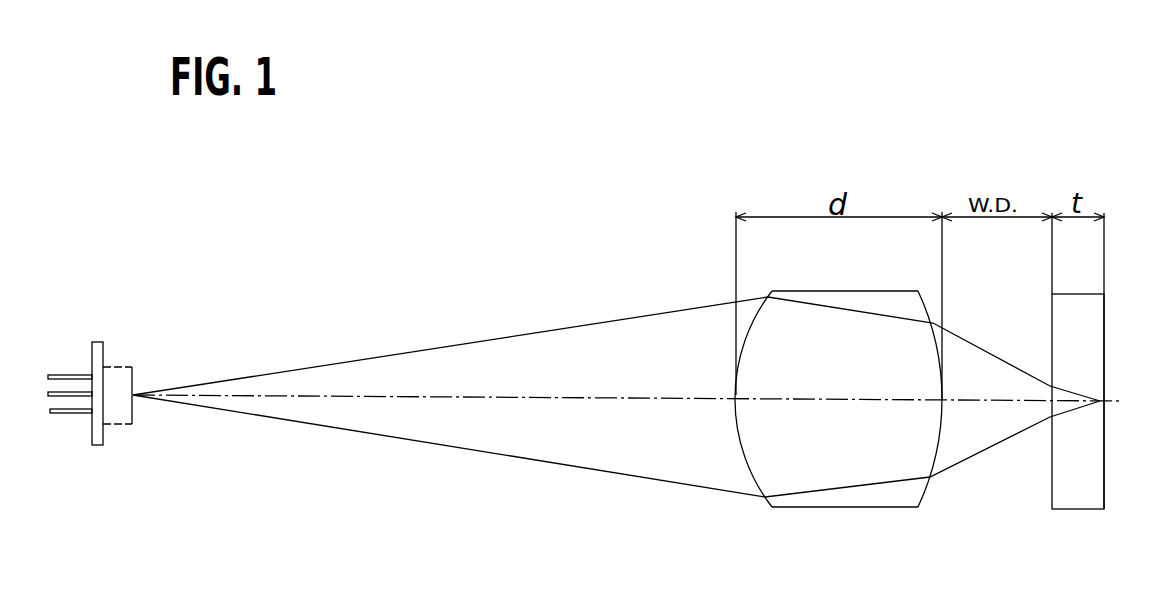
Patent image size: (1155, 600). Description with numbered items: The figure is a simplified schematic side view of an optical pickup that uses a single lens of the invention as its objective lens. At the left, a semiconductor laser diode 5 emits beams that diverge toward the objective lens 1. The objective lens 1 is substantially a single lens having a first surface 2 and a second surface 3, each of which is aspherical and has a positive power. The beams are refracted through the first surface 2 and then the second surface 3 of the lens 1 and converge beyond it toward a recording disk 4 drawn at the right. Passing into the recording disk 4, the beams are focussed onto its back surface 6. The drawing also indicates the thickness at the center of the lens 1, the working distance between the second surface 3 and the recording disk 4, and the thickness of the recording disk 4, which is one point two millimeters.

The objective lens 1 is at (832, 433).
The first surface 2 is at (748, 468).
The second surface 3 is at (932, 460).
The recording disk 4 is at (1088, 481).
The semiconductor laser diode 5 is at (117, 373).
The back surface 6 is at (1105, 342).